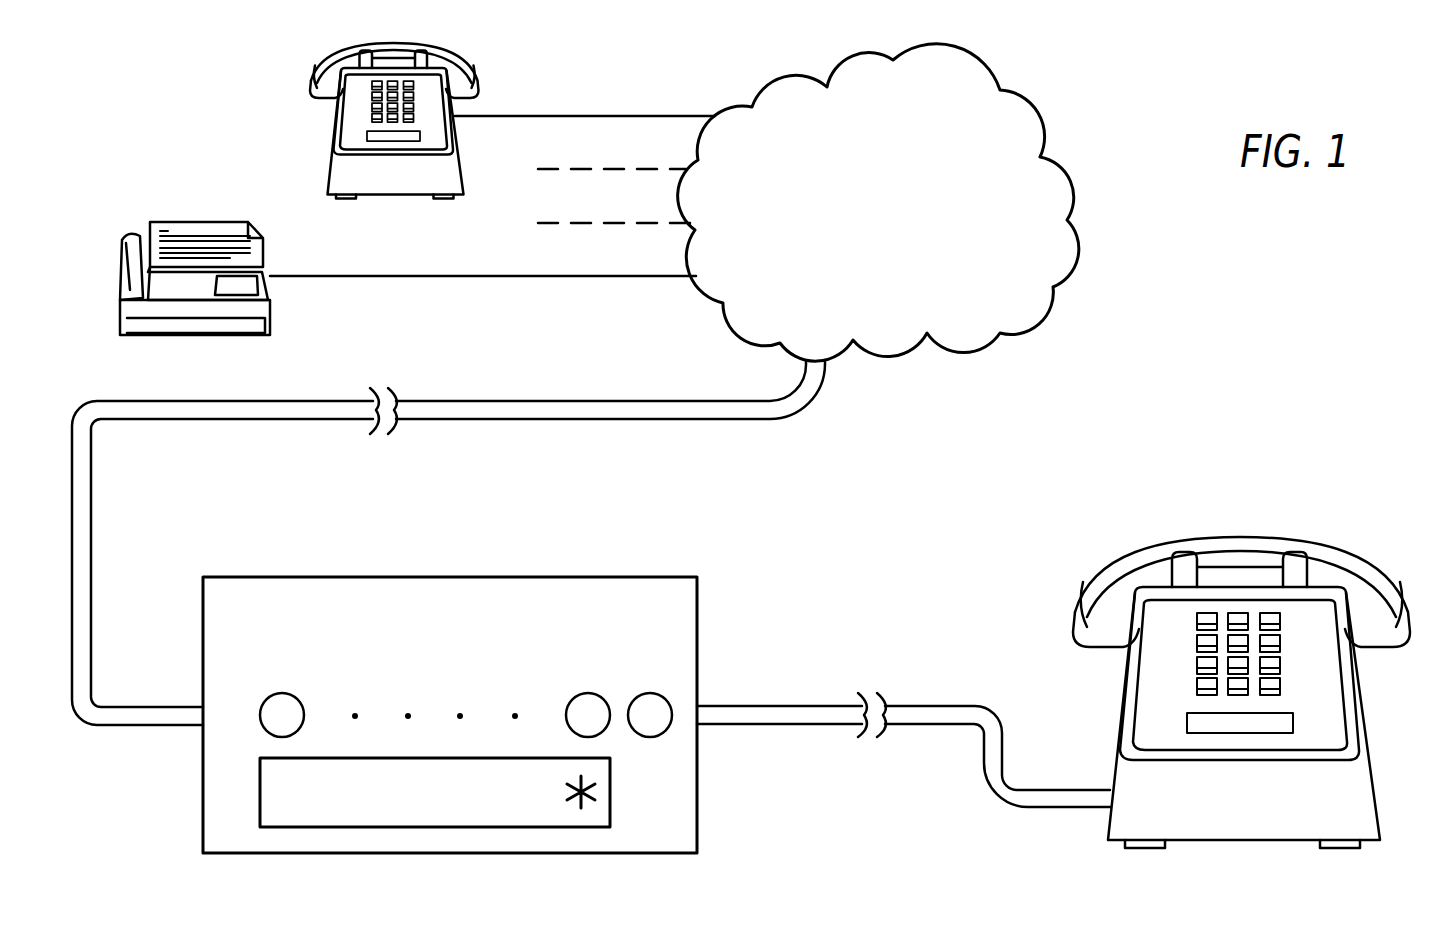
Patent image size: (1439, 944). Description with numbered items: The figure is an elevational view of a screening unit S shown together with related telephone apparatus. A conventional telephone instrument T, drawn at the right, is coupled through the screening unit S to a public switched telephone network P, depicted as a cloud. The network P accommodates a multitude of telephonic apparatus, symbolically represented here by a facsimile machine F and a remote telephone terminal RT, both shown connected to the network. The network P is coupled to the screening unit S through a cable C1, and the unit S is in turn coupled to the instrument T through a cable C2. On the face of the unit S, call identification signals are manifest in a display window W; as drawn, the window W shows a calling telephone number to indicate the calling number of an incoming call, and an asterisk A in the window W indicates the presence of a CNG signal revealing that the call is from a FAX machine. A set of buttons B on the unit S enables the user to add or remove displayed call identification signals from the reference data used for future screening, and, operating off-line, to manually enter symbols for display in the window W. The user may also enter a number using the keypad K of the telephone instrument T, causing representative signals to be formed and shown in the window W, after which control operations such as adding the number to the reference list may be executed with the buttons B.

The public switched telephone network P is at (1047, 157).
The remote telephone terminal RT is at (468, 90).
The facsimile machine F is at (182, 222).
The cable C1 is at (145, 708).
The cable C2 is at (768, 706).
The screening unit S is at (481, 693).
The buttons B is at (623, 732).
The display window W is at (432, 827).
The asterisk A is at (600, 792).
The telephone instrument T is at (1231, 692).
The keypad K is at (1232, 662).